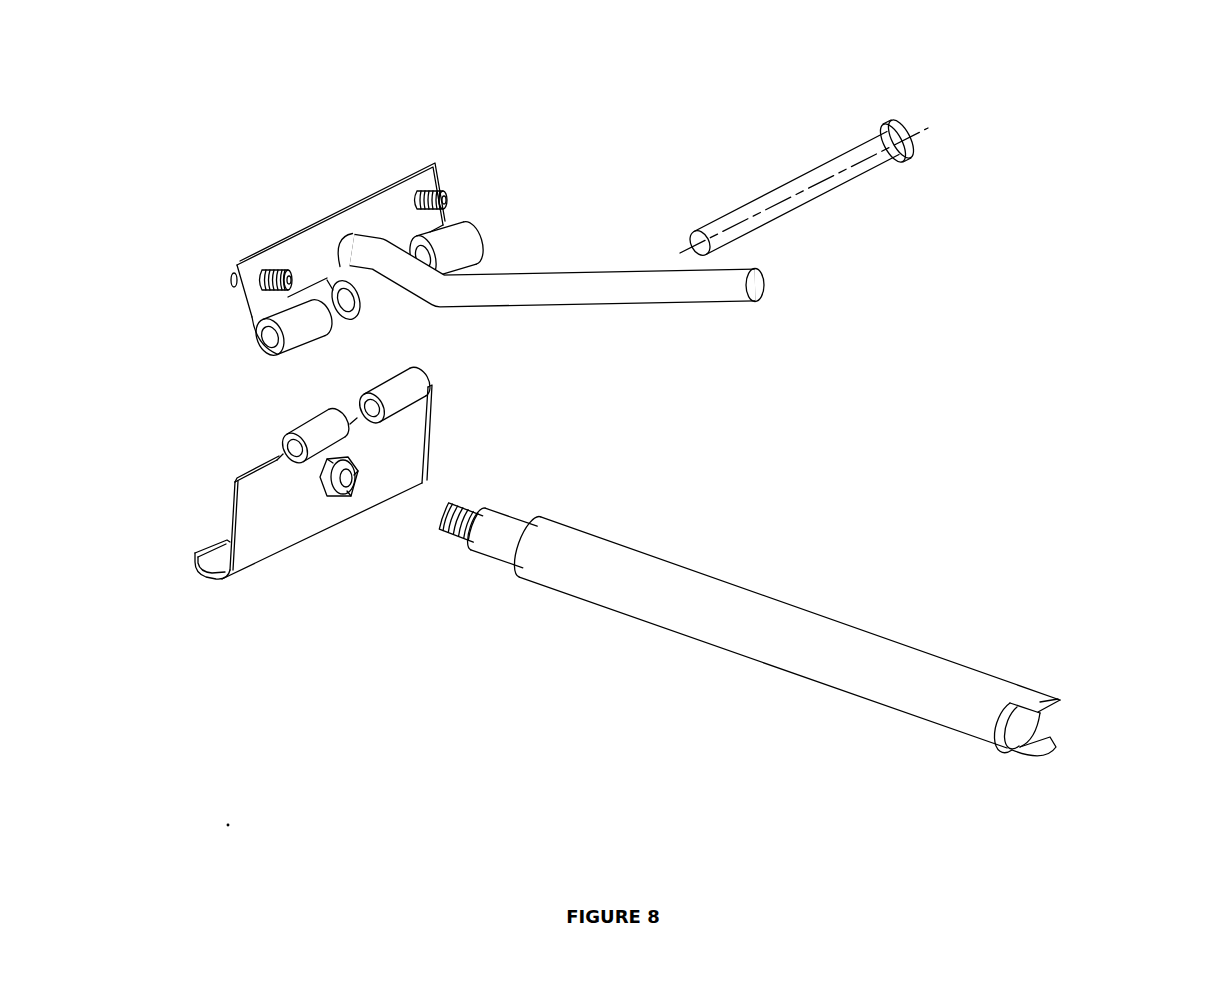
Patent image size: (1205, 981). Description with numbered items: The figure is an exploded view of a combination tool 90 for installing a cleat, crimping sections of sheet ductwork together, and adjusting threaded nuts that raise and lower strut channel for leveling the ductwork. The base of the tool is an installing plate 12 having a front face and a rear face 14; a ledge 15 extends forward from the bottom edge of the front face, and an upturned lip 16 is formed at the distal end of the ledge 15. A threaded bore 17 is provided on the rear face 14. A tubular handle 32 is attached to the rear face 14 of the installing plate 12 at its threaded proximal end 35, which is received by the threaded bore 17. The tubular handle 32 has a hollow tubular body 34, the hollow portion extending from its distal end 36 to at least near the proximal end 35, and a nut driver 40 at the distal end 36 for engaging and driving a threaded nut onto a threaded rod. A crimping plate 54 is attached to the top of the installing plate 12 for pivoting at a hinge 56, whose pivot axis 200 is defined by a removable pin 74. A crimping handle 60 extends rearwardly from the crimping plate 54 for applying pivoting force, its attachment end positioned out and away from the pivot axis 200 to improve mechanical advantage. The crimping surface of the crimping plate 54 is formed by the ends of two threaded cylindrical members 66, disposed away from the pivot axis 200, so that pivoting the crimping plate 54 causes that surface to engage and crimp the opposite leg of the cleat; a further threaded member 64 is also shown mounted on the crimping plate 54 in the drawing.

The installing plate 12 is at (247, 521).
The rear face 14 is at (258, 495).
The ledge 15 is at (213, 567).
The upturned lip 16 is at (203, 548).
The threaded bore 17 is at (347, 480).
The tubular handle 32 is at (818, 632).
The hollow tubular body 34 is at (977, 723).
The threaded proximal end 35 is at (473, 505).
The distal end 36 is at (1022, 690).
The nut driver 40 is at (1020, 719).
The crimping plate 54 is at (322, 252).
The hinge 56 is at (290, 447).
The crimping handle 60 is at (597, 273).
The set screw 64 is at (232, 285).
The threaded cylindrical members 66 is at (442, 193).
The removable pin 74 is at (897, 120).
The combination tool 90 is at (806, 357).
The pivot axis 200 is at (804, 145).